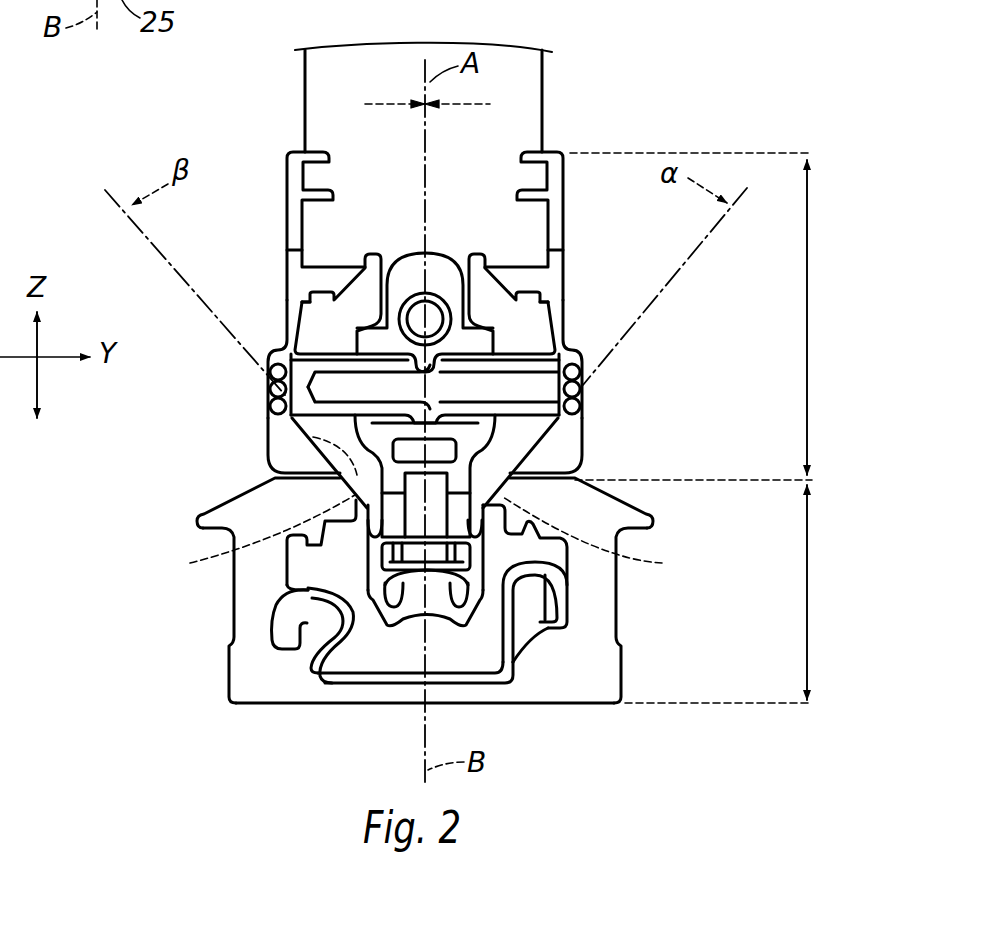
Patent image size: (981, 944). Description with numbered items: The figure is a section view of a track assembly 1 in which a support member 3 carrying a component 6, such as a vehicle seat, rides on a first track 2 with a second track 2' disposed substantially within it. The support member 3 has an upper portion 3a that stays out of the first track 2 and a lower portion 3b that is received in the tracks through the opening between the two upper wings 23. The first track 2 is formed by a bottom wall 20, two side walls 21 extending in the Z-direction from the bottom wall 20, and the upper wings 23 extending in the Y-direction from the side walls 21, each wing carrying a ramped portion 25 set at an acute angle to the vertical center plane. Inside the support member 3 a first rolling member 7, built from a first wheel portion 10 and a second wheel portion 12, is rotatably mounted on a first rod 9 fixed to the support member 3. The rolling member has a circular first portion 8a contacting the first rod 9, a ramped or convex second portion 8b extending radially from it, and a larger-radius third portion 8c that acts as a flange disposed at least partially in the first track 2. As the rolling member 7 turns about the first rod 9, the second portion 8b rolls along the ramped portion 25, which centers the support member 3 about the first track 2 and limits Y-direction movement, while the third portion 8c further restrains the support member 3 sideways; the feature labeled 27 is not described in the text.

The track assembly 1 is at (600, 66).
The first track 2 is at (425, 741).
The second track 2' is at (306, 678).
The support member 3 is at (290, 218).
The upper portion 3a is at (709, 316).
The lower portion 3b is at (737, 594).
The component 6 is at (305, 96).
The first rolling member 7 is at (518, 262).
The first portion 8a is at (318, 325).
The second portion 8b is at (290, 436).
The third portion 8c is at (375, 255).
The first rod 9 is at (585, 388).
The first wheel portion 10 is at (318, 288).
The second wheel portion 12 is at (522, 290).
The bottom wall 20 is at (392, 690).
The side walls 21 is at (250, 628).
The upper wings 23 is at (247, 513).
The ramped portion 25 is at (237, 550).
The slanted arm 27 is at (287, 476).